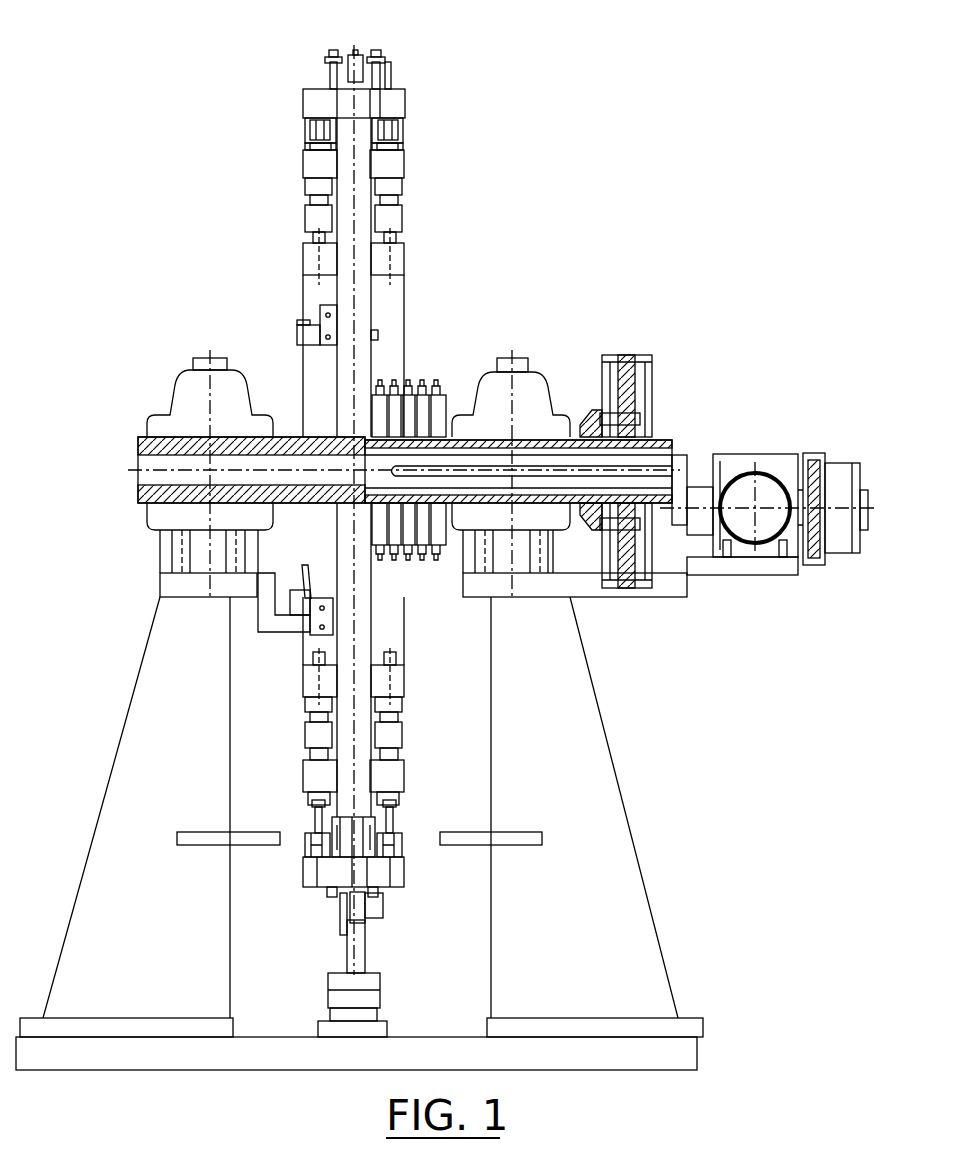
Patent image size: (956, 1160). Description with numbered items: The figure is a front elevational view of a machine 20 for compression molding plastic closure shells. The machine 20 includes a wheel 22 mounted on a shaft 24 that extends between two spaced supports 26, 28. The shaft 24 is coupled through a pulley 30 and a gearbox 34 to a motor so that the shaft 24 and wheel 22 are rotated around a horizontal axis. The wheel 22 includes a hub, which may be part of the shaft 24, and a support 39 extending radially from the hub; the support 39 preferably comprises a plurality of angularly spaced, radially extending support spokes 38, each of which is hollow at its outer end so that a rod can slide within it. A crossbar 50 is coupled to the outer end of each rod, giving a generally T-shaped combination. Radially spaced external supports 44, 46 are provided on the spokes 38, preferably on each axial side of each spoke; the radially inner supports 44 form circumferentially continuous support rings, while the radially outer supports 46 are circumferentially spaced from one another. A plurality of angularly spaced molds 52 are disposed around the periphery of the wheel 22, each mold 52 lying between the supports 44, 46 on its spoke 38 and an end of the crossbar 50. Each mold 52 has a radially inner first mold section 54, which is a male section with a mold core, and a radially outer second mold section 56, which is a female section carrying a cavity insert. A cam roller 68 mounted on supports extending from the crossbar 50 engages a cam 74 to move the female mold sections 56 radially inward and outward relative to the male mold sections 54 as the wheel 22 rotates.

The machine 20 is at (615, 248).
The wheel 22 is at (419, 87).
The shaft 24 is at (138, 495).
The support 26 is at (156, 697).
The support 28 is at (576, 713).
The pulley 30 is at (636, 356).
The gearbox 34 is at (727, 458).
The support spoke 38 is at (366, 326).
The support 39 is at (332, 291).
The radially inner support 44 is at (397, 263).
The radially outer support 46 is at (305, 166).
The crossbar 50 is at (313, 103).
The mold 52 is at (296, 143).
The first mold section 54 is at (410, 797).
The second mold section 56 is at (408, 848).
The cam roller 68 is at (356, 58).
The cam 74 is at (360, 946).